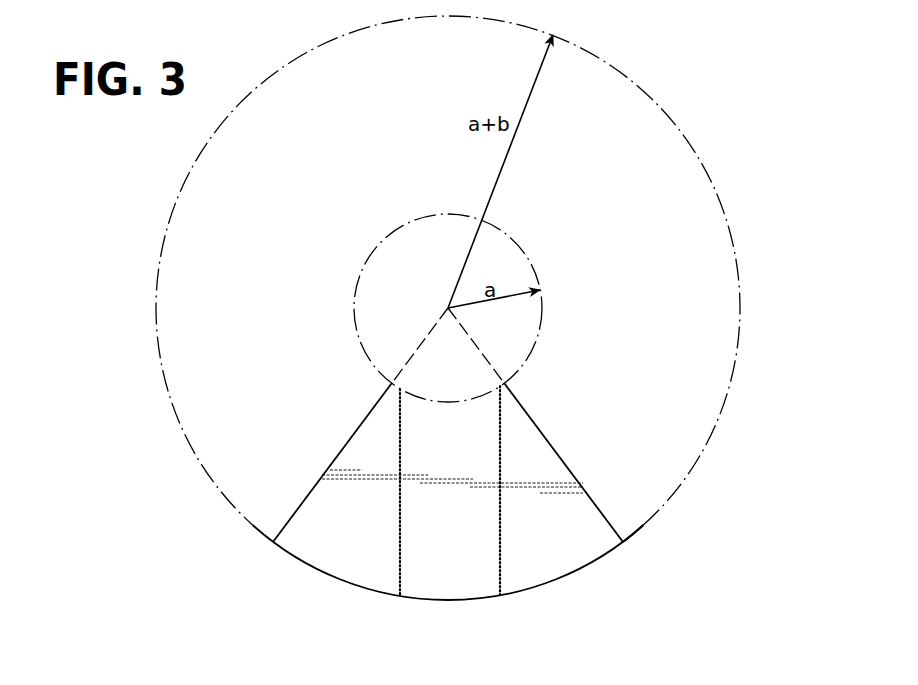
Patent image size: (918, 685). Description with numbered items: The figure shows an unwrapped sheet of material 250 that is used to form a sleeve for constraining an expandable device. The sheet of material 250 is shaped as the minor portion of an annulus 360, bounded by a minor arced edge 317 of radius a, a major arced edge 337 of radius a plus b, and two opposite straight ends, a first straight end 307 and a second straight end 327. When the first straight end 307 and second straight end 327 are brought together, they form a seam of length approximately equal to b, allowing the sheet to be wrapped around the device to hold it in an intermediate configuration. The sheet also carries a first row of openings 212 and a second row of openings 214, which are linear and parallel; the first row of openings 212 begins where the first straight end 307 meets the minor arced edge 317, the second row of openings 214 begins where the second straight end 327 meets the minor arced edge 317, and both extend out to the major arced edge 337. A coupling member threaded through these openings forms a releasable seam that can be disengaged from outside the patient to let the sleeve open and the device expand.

The annulus 360 is at (662, 168).
The sheet of material 250 is at (305, 538).
The second straight end 327 is at (322, 478).
The minor arced edge 317 is at (477, 392).
The first straight end 307 is at (573, 465).
The major arced edge 337 is at (608, 556).
The second row of openings 214 is at (400, 549).
The first row of openings 212 is at (500, 556).